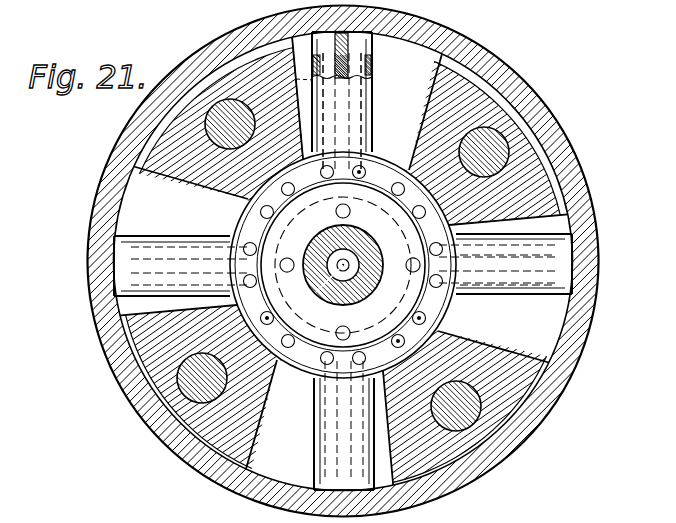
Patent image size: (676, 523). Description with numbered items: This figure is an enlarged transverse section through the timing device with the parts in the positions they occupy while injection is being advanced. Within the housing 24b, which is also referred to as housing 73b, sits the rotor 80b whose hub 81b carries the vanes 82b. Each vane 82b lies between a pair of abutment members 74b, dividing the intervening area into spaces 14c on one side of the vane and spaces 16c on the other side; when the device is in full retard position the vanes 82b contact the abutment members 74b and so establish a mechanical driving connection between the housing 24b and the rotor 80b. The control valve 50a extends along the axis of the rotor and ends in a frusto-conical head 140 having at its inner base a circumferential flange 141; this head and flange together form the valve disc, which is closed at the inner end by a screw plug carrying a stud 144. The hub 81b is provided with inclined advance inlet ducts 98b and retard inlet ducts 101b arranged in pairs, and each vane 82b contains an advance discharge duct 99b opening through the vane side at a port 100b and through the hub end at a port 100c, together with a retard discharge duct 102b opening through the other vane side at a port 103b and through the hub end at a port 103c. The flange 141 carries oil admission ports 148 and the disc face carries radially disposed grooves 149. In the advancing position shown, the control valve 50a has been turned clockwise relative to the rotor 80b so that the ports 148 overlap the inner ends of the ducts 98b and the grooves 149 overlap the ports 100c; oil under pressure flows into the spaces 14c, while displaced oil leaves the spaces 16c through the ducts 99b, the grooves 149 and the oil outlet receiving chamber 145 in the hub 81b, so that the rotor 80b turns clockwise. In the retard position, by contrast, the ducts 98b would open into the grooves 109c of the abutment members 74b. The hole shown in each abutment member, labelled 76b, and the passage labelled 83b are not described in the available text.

The housing 24b is at (536, 92).
The spaces between vanes and abutment members 16c is at (440, 70).
The spaces between vanes and abutment members 14c is at (240, 40).
The abutment members 74b is at (157, 152).
The housing 73b is at (120, 196).
The rotor bore 76b is at (210, 118).
The rotor 80b is at (373, 100).
The vanes 82b is at (398, 14).
The hub 81b is at (483, 285).
The vane passage 83b is at (522, 300).
The advance discharge duct 99b is at (362, 79).
The port 100b is at (366, 58).
The port 100c is at (360, 152).
The retard discharge duct 102b is at (296, 76).
The port 103b is at (296, 11).
The port 103c is at (340, 148).
The grooves 109c is at (287, 153).
The retard inlet ducts 101b is at (242, 220).
The advance inlet ducts 98b is at (330, 210).
The oil admission ports 148 is at (248, 204).
The radially disposed grooves 149 is at (368, 172).
The frusto-conical head 140 is at (305, 349).
The oil outlet receiving chamber 145 is at (453, 303).
The circumferential flange 141 is at (447, 330).
The stud 144 is at (324, 298).
The control valve 50a is at (346, 296).